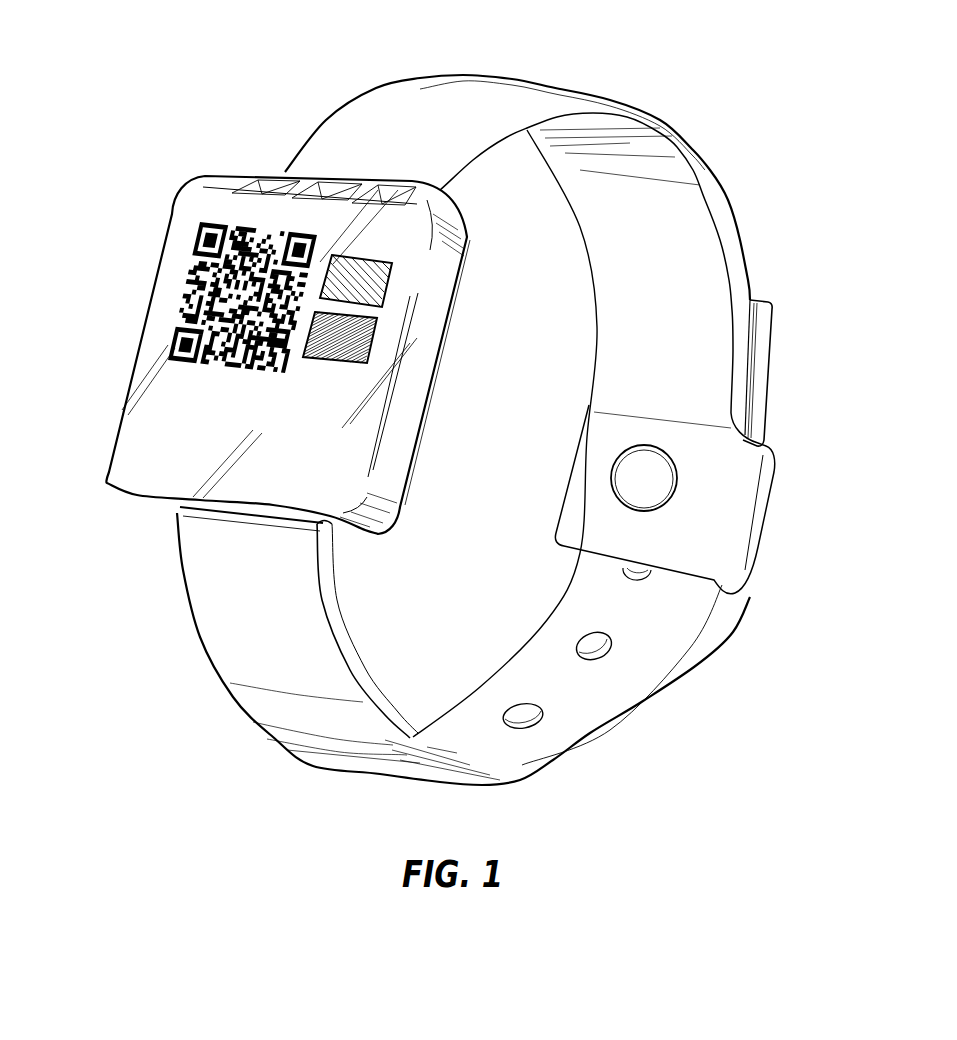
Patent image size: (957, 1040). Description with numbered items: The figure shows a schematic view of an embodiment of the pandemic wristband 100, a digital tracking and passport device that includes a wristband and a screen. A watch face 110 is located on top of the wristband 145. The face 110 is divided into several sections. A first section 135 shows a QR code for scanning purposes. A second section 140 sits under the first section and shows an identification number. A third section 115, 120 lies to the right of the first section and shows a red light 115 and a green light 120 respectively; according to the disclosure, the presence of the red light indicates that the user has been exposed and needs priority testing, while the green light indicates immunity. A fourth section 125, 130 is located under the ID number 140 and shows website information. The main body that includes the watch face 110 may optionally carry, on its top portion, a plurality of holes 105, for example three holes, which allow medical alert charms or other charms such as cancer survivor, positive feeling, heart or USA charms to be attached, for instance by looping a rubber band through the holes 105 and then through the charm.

The pandemic wristband 100 is at (716, 47).
The holes 105 is at (338, 178).
The watch face 110 is at (217, 175).
The red light 115 is at (396, 284).
The green light 120 is at (381, 340).
The fourth section 125 is at (359, 438).
The fourth section 130 is at (126, 451).
The first section 135 is at (181, 271).
The second section 140 is at (159, 367).
The wristband 145 is at (199, 641).